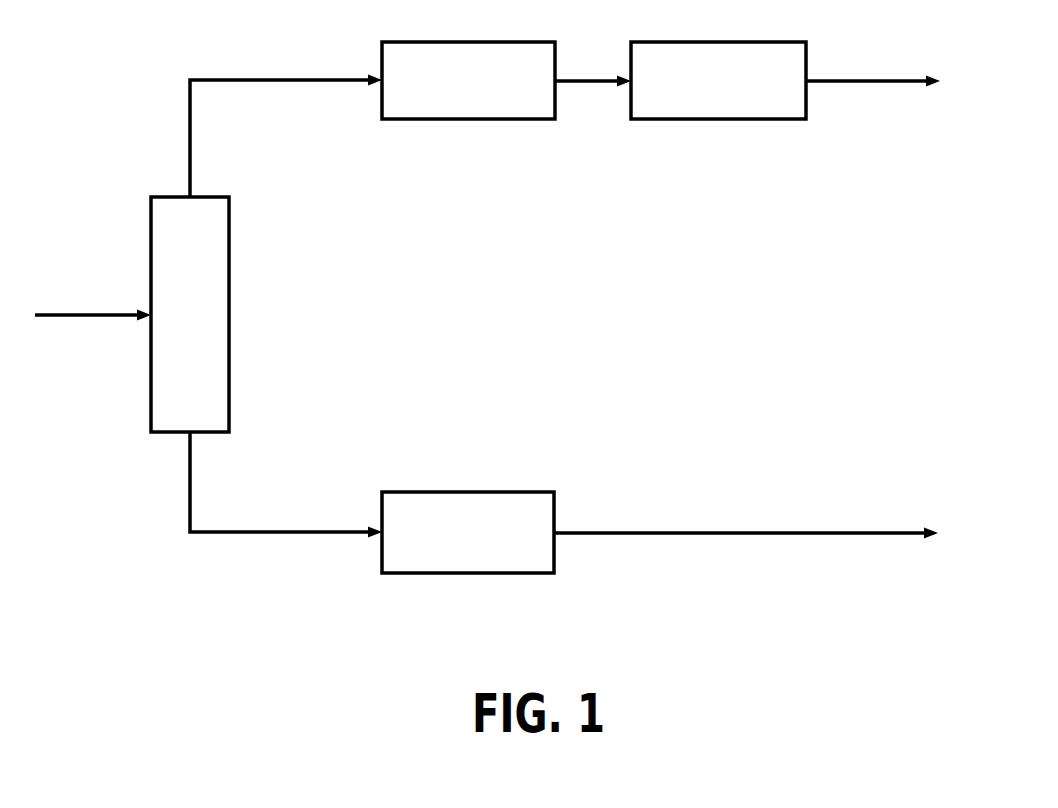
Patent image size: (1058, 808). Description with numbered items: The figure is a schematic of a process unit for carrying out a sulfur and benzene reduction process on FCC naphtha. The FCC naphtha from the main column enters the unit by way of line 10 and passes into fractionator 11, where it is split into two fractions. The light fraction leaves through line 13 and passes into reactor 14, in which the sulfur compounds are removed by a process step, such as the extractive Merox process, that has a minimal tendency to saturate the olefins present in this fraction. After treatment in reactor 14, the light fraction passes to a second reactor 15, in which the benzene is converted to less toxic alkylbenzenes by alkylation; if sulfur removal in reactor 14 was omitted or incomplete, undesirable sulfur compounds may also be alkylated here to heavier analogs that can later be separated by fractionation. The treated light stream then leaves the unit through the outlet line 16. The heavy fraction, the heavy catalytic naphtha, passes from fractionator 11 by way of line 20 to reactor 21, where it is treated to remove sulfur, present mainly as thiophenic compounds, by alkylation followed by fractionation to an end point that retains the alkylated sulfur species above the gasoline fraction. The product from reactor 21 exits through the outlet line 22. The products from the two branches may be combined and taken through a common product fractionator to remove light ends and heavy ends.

The line 10 is at (93, 313).
The fractionator 11 is at (229, 315).
The line 13 is at (286, 78).
The reactor 14 is at (455, 120).
The second reactor 15 is at (693, 120).
The product stream 16 is at (870, 84).
The line 20 is at (254, 535).
The reactor 21 is at (498, 574).
The bottoms product stream 22 is at (724, 530).